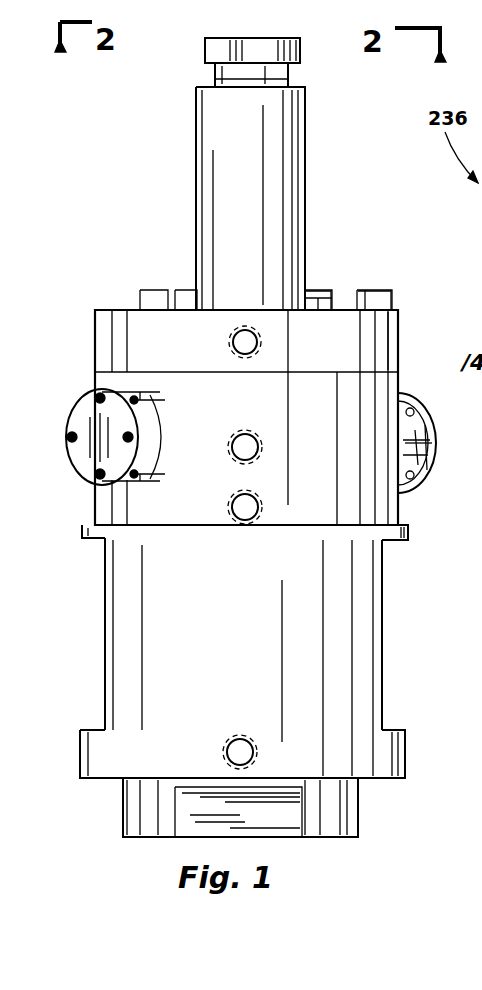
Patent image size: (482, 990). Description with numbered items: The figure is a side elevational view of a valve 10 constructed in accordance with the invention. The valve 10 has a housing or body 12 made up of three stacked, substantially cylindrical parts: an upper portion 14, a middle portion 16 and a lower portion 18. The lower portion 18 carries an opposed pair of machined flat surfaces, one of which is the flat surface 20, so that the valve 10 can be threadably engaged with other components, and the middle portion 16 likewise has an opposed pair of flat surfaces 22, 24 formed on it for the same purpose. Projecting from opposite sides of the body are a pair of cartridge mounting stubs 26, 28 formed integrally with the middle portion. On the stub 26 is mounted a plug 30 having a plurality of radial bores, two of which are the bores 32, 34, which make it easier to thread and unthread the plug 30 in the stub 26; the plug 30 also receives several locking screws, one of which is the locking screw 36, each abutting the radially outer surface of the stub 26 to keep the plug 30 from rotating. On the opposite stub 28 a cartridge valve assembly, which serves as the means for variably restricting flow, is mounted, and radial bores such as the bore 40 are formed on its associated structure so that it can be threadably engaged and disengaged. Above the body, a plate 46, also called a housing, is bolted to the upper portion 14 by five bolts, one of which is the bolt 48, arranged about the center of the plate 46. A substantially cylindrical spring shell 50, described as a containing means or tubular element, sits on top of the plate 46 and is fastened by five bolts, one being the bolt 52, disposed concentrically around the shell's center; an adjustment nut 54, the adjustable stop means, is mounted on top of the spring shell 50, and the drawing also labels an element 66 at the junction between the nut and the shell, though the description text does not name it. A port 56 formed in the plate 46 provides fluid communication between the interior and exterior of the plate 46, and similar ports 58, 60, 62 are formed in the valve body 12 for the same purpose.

The valve 10 is at (73, 320).
The housing or body 12 is at (410, 537).
The upper portion 14 is at (365, 503).
The middle portion 16 is at (360, 665).
The lower portion 18 is at (340, 812).
The flat surface 20 is at (238, 812).
The flat surface 22 is at (105, 637).
The flat surface 24 is at (382, 603).
The cartridge mounting stub 26 is at (172, 440).
The cartridge mounting stub 28 is at (425, 446).
The plug 30 is at (78, 403).
The radial bore 32 is at (135, 404).
The radial bore 34 is at (150, 486).
The locking screw 36 is at (68, 438).
The radial bore 40 is at (410, 410).
The plate 46 is at (378, 350).
The bolt 48 is at (376, 300).
The spring shell 50 is at (277, 186).
The bolt 52 is at (314, 300).
The adjustment nut 54 is at (250, 55).
The port 56 is at (232, 340).
The port 58 is at (248, 446).
The port 60 is at (250, 508).
The port 62 is at (240, 745).
The neck 66 is at (288, 80).